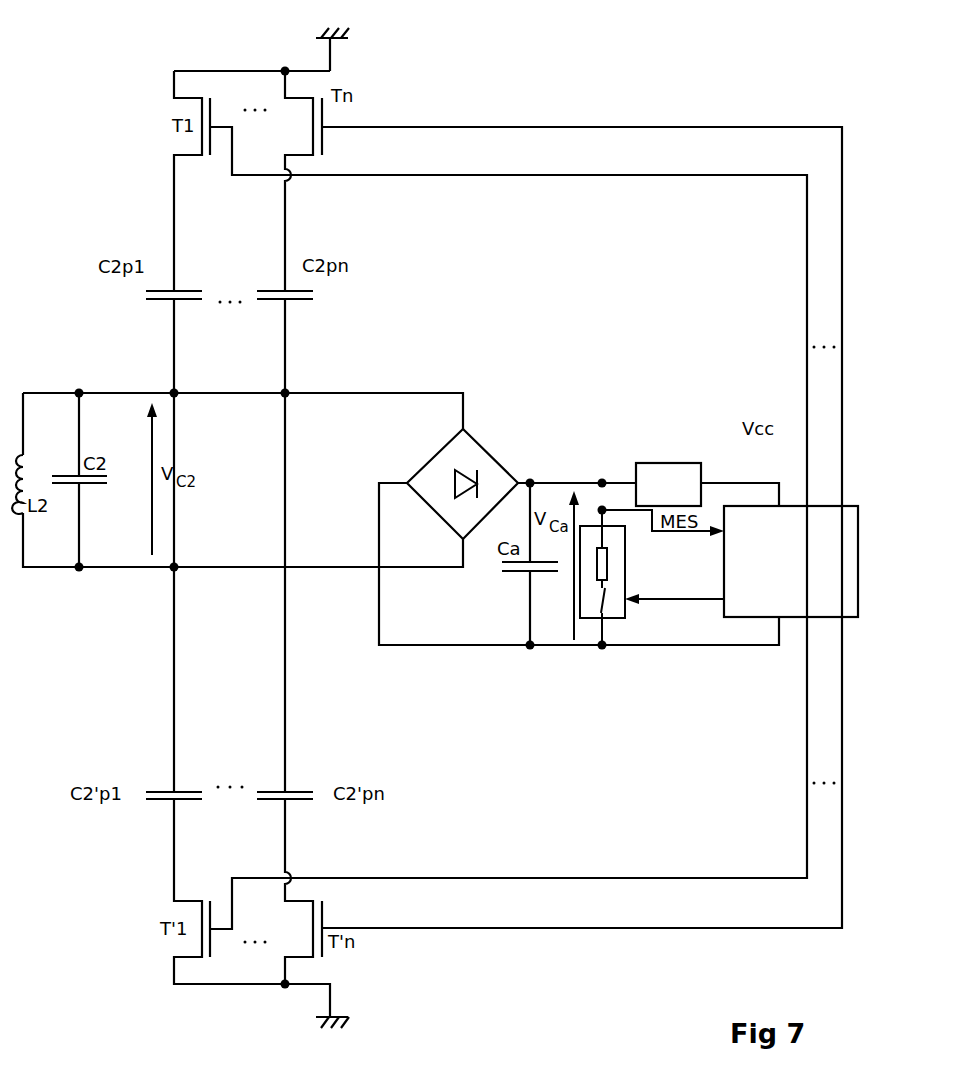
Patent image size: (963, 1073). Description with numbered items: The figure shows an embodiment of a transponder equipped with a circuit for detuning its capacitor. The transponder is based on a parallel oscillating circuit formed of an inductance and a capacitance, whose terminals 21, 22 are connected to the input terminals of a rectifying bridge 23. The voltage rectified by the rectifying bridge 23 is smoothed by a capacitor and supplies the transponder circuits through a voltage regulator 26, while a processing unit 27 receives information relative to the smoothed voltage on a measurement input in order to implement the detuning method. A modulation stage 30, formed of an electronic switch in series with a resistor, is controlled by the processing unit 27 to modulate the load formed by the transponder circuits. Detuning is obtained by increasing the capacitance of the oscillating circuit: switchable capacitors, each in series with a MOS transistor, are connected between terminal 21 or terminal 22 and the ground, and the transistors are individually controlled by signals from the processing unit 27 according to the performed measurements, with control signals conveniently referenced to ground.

The terminal of resonant circuit 21 is at (79, 392).
The terminal of resonant circuit 22 is at (82, 570).
The rectifying bridge 23 is at (490, 455).
The voltage regulator 26 is at (672, 463).
The processing unit 27 is at (745, 617).
The modulation stage 30 is at (625, 563).